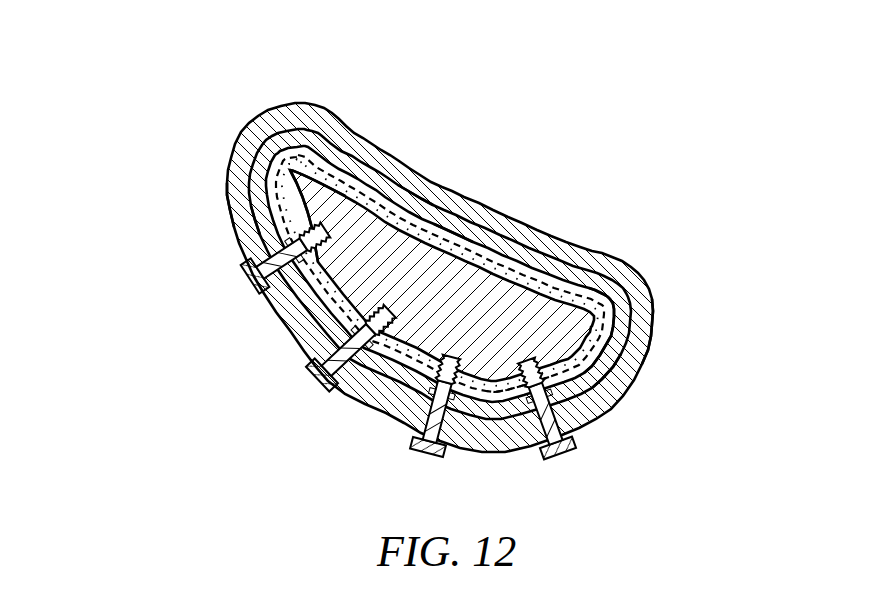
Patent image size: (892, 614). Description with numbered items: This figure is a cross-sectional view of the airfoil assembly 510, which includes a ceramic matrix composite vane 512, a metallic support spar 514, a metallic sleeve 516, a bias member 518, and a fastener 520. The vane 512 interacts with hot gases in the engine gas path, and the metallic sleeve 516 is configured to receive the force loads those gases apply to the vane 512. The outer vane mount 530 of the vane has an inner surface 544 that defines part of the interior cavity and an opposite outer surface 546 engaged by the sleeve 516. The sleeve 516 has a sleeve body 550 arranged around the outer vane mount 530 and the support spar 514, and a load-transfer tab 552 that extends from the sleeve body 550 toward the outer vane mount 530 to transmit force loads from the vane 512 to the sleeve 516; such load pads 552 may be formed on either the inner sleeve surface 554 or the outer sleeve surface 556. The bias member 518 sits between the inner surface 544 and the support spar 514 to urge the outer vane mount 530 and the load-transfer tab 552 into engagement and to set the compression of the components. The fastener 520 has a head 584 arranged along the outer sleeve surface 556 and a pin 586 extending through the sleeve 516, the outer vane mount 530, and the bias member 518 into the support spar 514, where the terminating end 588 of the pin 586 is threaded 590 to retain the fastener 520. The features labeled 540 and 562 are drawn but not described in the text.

The airfoil assembly 510 is at (407, 256).
The ceramic matrix composite vane 512 is at (235, 176).
The metallic support spar 514 is at (462, 252).
The metallic sleeve 516 is at (660, 266).
The bias member 518 is at (289, 167).
The fastener 520 is at (235, 282).
The outer vane mount 530 is at (246, 200).
The second fastener 540 is at (308, 298).
The inner surface 544 is at (343, 185).
The outer surface 546 is at (302, 168).
The sleeve body 550 is at (659, 358).
The load-transfer tab 552 is at (603, 414).
The inner sleeve surface 554 is at (410, 206).
The outer sleeve surface 556 is at (445, 212).
The shell inner boundary 562 is at (607, 385).
The head 584 is at (574, 461).
The pin 586 is at (512, 416).
The terminating end 588 is at (402, 385).
The threaded 590 is at (595, 300).